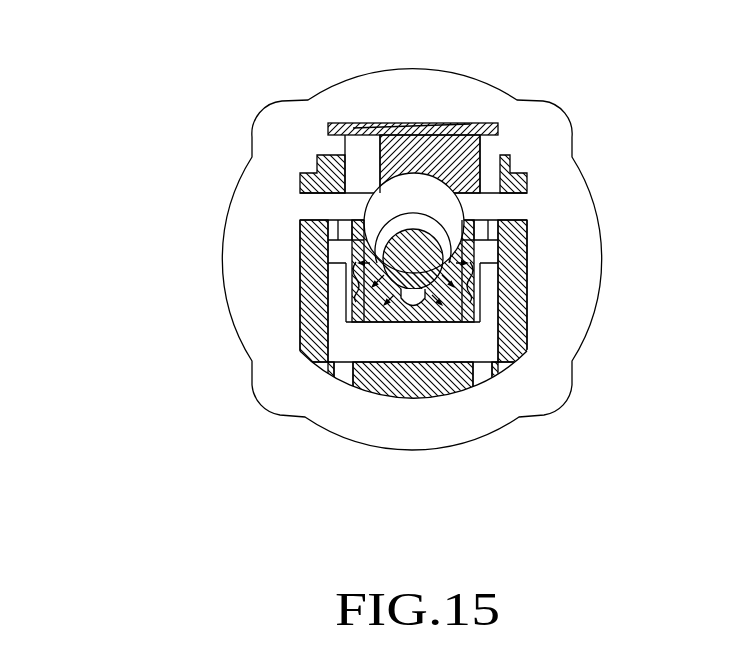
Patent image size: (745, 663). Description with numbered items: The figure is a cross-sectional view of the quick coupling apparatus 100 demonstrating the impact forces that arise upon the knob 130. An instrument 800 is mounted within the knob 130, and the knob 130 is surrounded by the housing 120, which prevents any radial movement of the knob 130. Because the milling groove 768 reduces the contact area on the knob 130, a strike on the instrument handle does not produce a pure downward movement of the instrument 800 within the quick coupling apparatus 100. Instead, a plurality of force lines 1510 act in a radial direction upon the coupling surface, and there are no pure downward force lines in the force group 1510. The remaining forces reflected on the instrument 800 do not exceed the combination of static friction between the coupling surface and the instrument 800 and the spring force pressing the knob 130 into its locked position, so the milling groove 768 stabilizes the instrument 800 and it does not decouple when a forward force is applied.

The quick coupling apparatus 100 is at (628, 98).
The housing 120 is at (527, 350).
The knob 130 is at (352, 343).
The milling groove 768 is at (417, 298).
The instrument 800 is at (387, 232).
The force lines 1510 is at (360, 283).